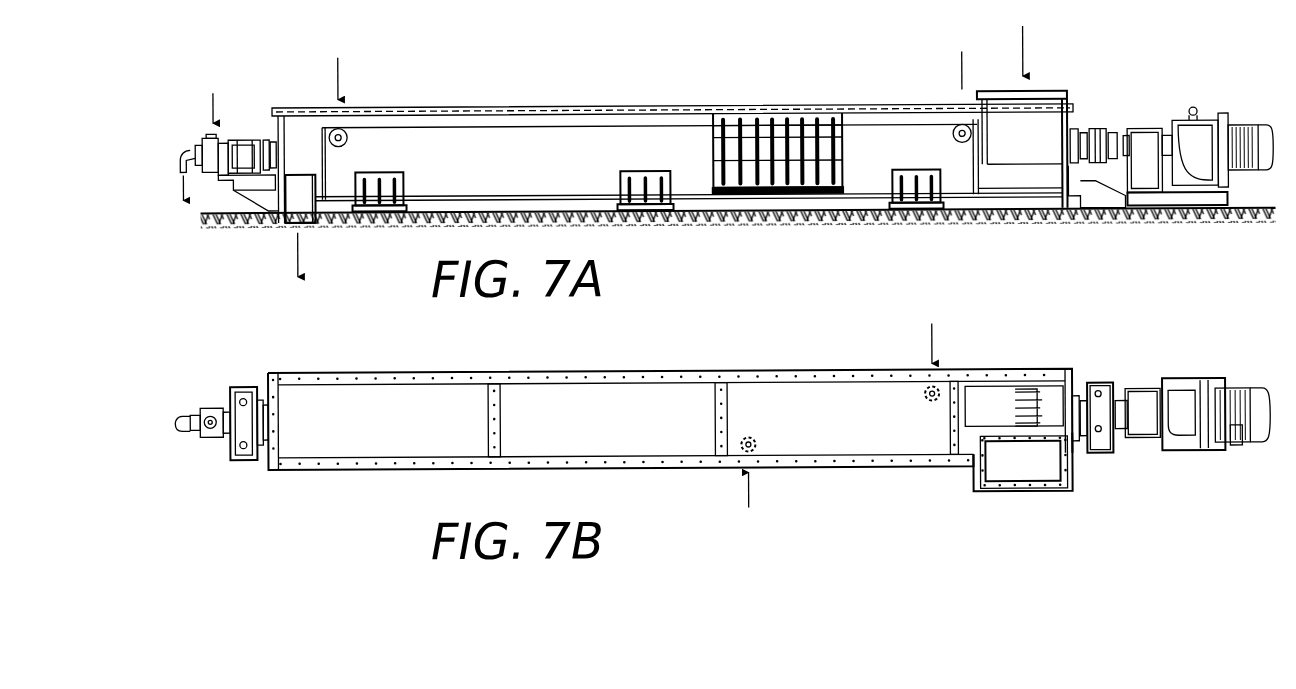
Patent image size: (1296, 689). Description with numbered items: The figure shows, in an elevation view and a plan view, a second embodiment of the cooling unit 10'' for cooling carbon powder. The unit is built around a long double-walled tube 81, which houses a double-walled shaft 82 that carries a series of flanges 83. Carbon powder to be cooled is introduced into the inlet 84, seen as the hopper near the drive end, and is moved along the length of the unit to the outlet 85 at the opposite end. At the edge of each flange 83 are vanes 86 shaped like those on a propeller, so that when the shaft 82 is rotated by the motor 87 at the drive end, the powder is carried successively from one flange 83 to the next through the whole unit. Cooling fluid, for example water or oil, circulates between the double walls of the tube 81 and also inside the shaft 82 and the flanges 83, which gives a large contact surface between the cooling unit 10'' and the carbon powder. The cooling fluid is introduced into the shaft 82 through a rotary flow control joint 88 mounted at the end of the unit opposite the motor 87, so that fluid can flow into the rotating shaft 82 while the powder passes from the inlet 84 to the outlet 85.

In FIG. 7A, the cooling unit 10'' is at (673, 118).
In FIG. 7B, the cooling unit 10'' is at (670, 419).
In FIG. 7A, the double-walled tube 81 is at (770, 200).
In FIG. 7A, the double-walled shaft 82 is at (781, 146).
In FIG. 7A, the flanges 83 is at (813, 124).
In FIG. 7A, the inlet 84 is at (1043, 94).
In FIG. 7B, the inlet 84 is at (1060, 473).
In FIG. 7A, the outlet 85 is at (309, 226).
In FIG. 7A, the vanes 86 is at (762, 120).
In FIG. 7A, the motor 87 is at (1232, 128).
In FIG. 7B, the motor 87 is at (1171, 415).
In FIG. 7A, the rotary flow control joint 88 is at (216, 148).
In FIG. 7B, the rotary flow control joint 88 is at (211, 437).